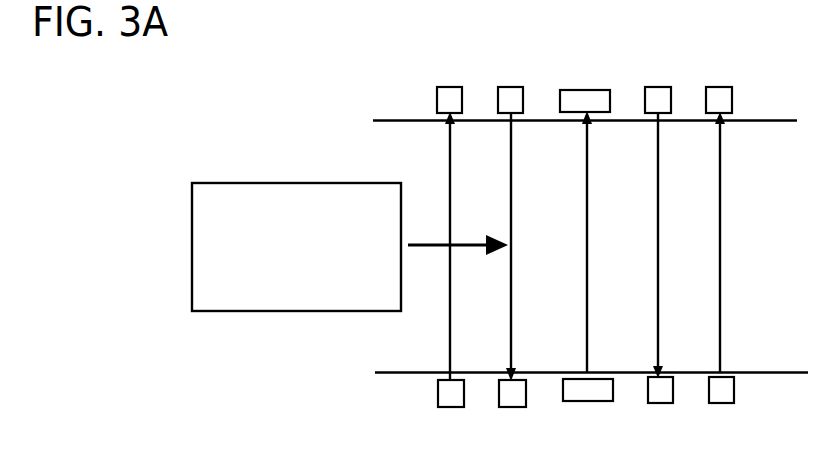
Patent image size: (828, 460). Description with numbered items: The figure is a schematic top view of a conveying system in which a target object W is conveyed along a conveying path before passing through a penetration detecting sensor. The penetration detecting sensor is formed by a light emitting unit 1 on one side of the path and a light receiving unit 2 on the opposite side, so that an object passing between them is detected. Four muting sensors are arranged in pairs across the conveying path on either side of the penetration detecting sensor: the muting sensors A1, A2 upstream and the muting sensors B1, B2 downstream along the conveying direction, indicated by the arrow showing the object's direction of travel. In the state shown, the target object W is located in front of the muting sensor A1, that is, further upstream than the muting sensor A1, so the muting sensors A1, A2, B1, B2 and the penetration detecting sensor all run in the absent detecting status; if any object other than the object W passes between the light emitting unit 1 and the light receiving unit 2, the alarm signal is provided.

The target object W is at (245, 183).
The muting sensor A1 is at (443, 87).
The muting sensor A2 is at (506, 87).
The light receiving unit 2 is at (588, 90).
The light emitting unit 1 is at (572, 401).
The muting sensor B1 is at (660, 87).
The muting sensor B2 is at (713, 87).